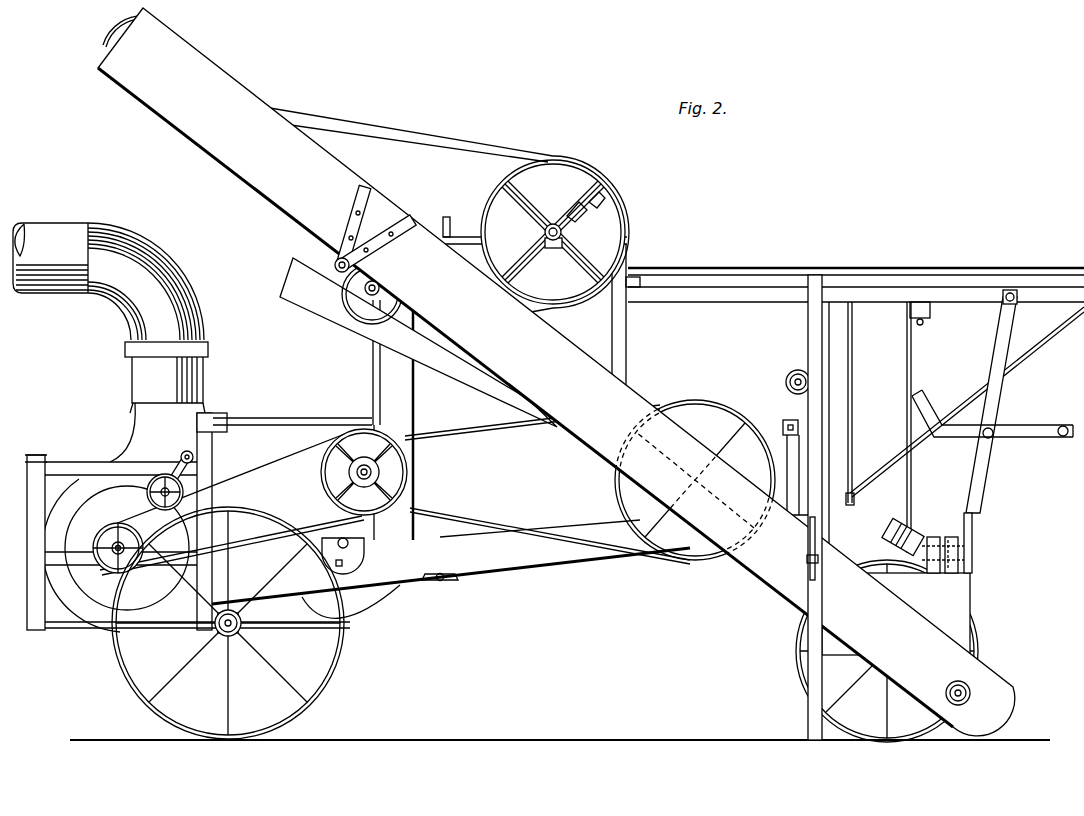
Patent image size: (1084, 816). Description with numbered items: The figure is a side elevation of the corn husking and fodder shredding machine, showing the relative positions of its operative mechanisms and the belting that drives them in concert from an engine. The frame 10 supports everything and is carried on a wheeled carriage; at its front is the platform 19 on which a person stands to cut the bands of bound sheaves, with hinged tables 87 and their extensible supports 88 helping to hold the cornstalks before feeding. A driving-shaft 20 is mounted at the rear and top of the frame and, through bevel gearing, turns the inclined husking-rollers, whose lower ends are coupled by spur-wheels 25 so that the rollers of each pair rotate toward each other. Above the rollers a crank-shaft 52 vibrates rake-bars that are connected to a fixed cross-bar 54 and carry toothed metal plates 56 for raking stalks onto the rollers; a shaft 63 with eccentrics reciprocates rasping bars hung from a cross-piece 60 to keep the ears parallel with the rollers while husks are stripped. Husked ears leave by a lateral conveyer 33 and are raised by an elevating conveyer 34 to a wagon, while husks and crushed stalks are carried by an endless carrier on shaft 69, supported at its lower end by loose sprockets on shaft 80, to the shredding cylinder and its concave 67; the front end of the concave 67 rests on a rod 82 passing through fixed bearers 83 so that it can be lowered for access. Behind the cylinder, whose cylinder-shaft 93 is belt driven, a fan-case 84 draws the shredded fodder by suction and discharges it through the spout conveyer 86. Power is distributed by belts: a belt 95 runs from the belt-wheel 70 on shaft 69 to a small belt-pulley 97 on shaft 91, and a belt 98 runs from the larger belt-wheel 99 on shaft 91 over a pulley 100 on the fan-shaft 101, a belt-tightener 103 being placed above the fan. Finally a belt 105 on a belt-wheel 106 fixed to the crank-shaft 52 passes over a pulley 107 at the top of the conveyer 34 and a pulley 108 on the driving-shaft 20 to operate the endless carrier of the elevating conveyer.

The frame 10 is at (373, 388).
The platform 19 is at (1012, 438).
The driving-shaft 20 is at (385, 288).
The spur-wheels 25 is at (914, 534).
The conveyer 33 is at (963, 557).
The conveyer 34 is at (896, 614).
The crank-shaft 52 is at (553, 242).
The cross-bar 54 is at (447, 226).
The toothed metal plates 56 is at (612, 198).
The cross-piece 60 is at (928, 320).
The shaft 63 is at (793, 390).
The concave 67 is at (386, 602).
The shaft 69 is at (684, 480).
The belt-wheel 70 is at (710, 560).
The shaft 80 is at (722, 522).
The rod 82 is at (441, 573).
The bearers 83 is at (455, 579).
The fan-case 84 is at (106, 629).
The spout conveyer 86 is at (110, 318).
The tables 87 is at (782, 270).
The extensible supports 88 is at (807, 709).
The shaft 91 is at (345, 480).
The cylinder-shaft 93 is at (360, 543).
The belt 95 is at (498, 437).
The belt-pulley 97 is at (405, 473).
The belt 98 is at (283, 463).
The belt-wheel 99 is at (352, 497).
The pulley 100 is at (118, 524).
The fan-shaft 101 is at (122, 570).
The belt-tightener 103 is at (170, 474).
The belt 105 is at (440, 133).
The belt-wheel 106 is at (420, 184).
The pulley 107 is at (112, 52).
The pulley 108 is at (395, 318).